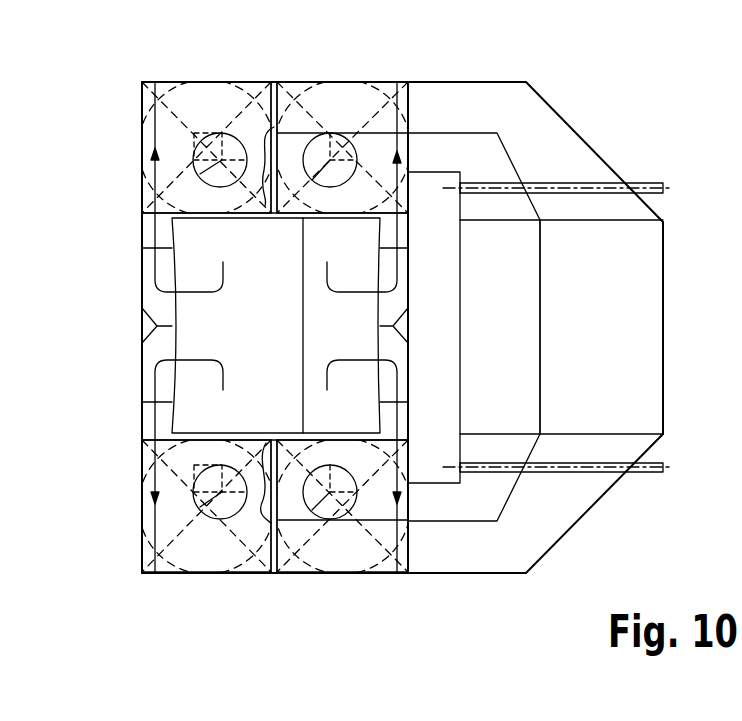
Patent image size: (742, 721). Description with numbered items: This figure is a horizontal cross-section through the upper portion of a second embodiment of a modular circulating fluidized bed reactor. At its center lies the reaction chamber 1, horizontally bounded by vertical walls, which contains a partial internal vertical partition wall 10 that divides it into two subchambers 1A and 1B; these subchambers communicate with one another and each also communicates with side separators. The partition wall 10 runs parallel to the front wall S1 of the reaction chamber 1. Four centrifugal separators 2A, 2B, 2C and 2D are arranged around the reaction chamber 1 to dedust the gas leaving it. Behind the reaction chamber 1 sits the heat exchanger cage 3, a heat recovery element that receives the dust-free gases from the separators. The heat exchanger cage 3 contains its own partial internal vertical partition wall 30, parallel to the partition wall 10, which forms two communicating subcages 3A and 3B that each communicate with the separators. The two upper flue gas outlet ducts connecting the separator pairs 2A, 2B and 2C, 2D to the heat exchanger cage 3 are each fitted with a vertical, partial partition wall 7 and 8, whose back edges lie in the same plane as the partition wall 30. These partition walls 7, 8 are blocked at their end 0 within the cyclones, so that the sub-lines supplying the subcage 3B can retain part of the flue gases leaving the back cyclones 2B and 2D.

The reaction chamber 1 is at (160, 306).
The subchamber 1A is at (229, 325).
The subchamber 1B is at (350, 325).
The centrifugal separator 2A is at (230, 552).
The centrifugal separator 2B is at (332, 552).
The centrifugal separator 2C is at (232, 102).
The centrifugal separator 2D is at (332, 100).
The end of partition wall 0 is at (258, 170).
The partial internal vertical partition wall 10 is at (302, 392).
The front wall S1 is at (142, 260).
The heat exchanger cage 3 is at (567, 329).
The subcage 3A is at (601, 327).
The subcage 3B is at (500, 327).
The partial internal vertical partition wall 30 is at (540, 379).
The vertical partial partition wall 8 is at (468, 133).
The vertical partial partition wall 7 is at (465, 521).